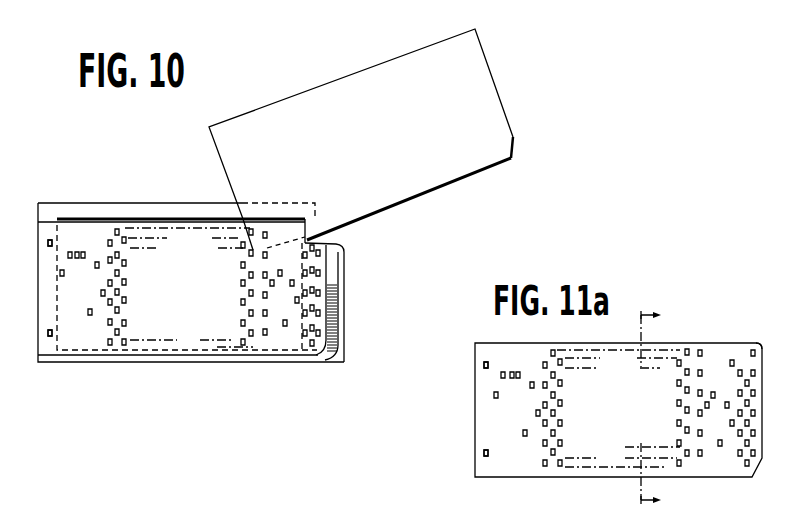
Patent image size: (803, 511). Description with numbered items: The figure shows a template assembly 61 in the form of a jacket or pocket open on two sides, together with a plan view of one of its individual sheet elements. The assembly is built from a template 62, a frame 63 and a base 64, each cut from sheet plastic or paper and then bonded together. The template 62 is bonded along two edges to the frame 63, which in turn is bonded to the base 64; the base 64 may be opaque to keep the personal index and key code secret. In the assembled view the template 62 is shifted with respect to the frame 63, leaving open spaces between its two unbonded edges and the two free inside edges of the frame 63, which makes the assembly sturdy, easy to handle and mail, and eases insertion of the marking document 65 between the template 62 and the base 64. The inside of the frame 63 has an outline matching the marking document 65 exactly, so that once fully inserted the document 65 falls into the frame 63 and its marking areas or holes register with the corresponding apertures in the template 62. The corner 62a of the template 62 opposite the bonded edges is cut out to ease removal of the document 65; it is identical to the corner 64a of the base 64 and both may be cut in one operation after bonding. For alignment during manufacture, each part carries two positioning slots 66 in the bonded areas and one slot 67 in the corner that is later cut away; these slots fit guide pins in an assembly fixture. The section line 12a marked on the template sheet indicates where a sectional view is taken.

In FIG. 10, the template assembly 61 is at (355, 345).
In FIG. 10, the template 62 is at (93, 233).
In FIG. 11a, the template 62 is at (470, 420).
In FIG. 10, the corner of the template 62a is at (314, 223).
In FIG. 10, the frame 63 is at (150, 203).
In FIG. 10, the base 64 is at (329, 303).
In FIG. 10, the corner of the base 64a is at (330, 242).
In FIG. 10, the marking document 65 is at (440, 188).
In FIG. 10, the positioning slots 66 is at (47, 333).
In FIG. 11a, the positioning slots 66 is at (480, 458).
In FIG. 11a, the slot 67 is at (754, 350).
In FIG. 11a, the section line 12a is at (667, 407).